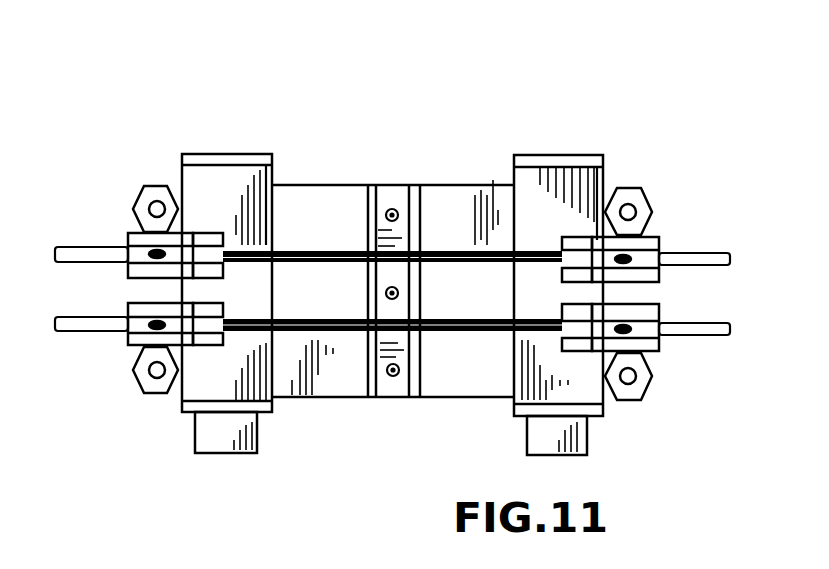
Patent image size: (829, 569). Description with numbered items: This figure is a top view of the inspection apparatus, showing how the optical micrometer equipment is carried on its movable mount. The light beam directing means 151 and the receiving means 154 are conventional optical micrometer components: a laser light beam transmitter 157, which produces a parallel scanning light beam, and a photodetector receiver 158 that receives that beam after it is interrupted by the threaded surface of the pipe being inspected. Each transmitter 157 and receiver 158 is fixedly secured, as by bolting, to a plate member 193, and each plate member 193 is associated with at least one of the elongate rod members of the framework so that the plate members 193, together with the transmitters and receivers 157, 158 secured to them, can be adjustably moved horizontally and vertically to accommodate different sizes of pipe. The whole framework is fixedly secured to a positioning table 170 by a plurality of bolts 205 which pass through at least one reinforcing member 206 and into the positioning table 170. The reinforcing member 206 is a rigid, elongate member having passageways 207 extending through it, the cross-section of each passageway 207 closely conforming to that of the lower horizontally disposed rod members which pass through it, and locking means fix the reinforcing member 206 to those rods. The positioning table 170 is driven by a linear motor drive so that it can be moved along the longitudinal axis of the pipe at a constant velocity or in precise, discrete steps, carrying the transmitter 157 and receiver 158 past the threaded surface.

The light beam directing means 151 is at (193, 447).
The receiving means 154 is at (587, 447).
The laser light beam transmitter 157 is at (604, 150).
The photodetector receiver 158 is at (203, 148).
The positioning table 170 is at (305, 398).
The plate member 193 is at (276, 170).
The bolts 205 is at (390, 209).
The reinforcing member 206 is at (409, 186).
The passageways 207 is at (403, 358).